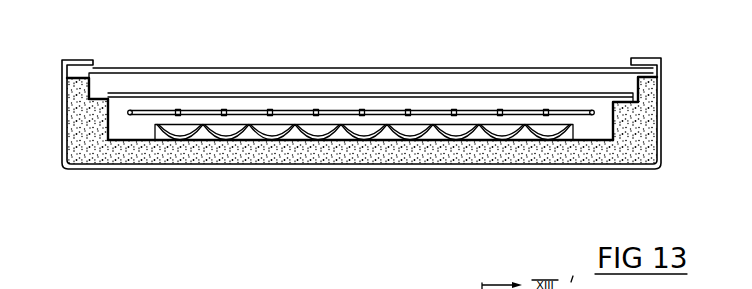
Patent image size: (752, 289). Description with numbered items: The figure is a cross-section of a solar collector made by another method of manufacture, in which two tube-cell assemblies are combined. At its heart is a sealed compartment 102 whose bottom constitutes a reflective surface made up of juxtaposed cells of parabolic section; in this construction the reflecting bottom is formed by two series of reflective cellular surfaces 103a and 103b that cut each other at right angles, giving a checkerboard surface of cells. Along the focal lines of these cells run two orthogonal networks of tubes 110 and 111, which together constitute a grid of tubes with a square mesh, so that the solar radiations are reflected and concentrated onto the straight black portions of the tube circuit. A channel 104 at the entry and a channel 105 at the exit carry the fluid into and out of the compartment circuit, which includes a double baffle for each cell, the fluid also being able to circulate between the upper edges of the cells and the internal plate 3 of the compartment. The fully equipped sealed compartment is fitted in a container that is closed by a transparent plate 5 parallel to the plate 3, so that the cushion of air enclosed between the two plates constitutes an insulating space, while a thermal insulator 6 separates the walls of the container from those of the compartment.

The plate of the compartment 3 is at (387, 95).
The transparent plate 5 is at (452, 70).
The thermal insulator 6 is at (476, 150).
The compartment 102 is at (270, 127).
The reflective cellular surface 103a is at (315, 134).
The reflective cellular surface 103b is at (257, 126).
The channel 104 is at (132, 119).
The channel 105 is at (603, 123).
The network of tubes 110 is at (178, 116).
The network of tubes 111 is at (158, 111).